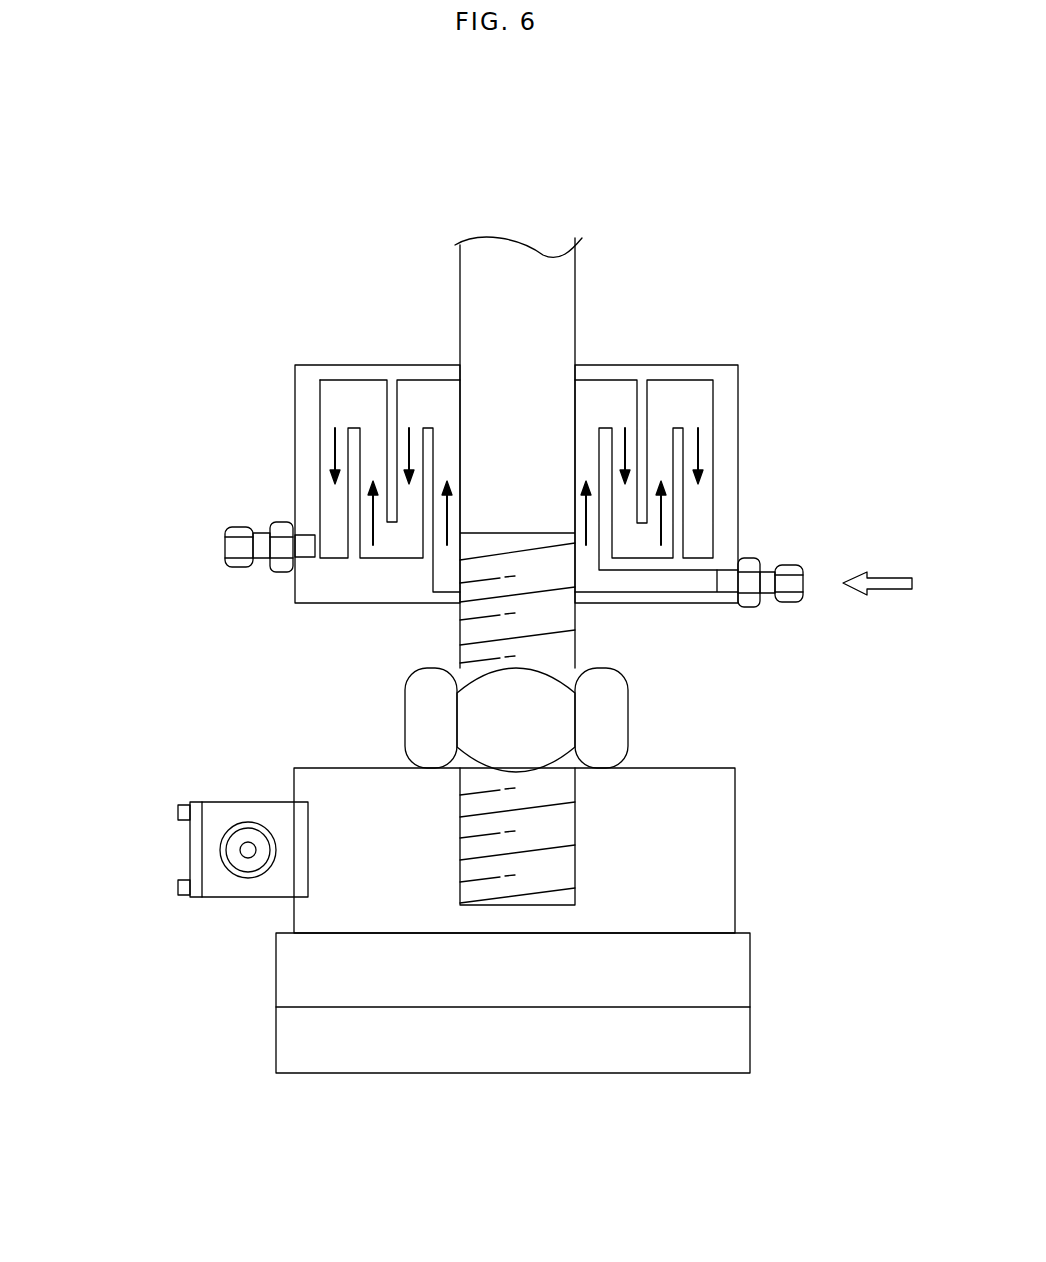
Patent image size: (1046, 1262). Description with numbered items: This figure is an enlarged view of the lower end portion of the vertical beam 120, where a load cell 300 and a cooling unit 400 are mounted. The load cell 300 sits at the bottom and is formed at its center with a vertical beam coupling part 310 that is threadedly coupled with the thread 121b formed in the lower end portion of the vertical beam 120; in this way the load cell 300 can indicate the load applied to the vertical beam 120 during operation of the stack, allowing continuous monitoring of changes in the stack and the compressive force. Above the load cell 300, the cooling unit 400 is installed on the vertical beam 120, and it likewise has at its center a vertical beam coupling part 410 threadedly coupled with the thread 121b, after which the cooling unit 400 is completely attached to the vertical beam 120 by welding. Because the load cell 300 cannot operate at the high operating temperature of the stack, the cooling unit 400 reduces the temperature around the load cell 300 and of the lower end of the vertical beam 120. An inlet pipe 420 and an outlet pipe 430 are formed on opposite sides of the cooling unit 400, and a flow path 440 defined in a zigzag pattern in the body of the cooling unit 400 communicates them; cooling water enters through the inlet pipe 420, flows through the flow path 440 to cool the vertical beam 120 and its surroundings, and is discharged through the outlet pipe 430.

The vertical beam 120 is at (466, 282).
The thread 121b is at (460, 636).
The load cell 300 is at (248, 945).
The vertical beam coupling part 310 is at (557, 922).
The cooling unit 400 is at (288, 413).
The vertical beam coupling part 410 is at (573, 425).
The inlet pipe 420 is at (792, 568).
The outlet pipe 430 is at (235, 532).
The flow path 440 is at (693, 400).